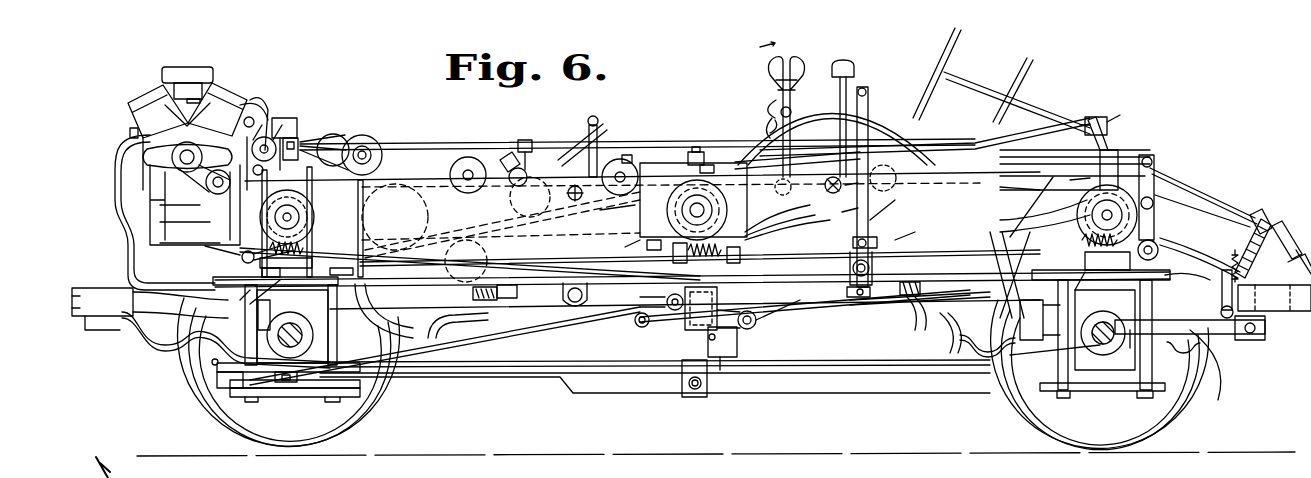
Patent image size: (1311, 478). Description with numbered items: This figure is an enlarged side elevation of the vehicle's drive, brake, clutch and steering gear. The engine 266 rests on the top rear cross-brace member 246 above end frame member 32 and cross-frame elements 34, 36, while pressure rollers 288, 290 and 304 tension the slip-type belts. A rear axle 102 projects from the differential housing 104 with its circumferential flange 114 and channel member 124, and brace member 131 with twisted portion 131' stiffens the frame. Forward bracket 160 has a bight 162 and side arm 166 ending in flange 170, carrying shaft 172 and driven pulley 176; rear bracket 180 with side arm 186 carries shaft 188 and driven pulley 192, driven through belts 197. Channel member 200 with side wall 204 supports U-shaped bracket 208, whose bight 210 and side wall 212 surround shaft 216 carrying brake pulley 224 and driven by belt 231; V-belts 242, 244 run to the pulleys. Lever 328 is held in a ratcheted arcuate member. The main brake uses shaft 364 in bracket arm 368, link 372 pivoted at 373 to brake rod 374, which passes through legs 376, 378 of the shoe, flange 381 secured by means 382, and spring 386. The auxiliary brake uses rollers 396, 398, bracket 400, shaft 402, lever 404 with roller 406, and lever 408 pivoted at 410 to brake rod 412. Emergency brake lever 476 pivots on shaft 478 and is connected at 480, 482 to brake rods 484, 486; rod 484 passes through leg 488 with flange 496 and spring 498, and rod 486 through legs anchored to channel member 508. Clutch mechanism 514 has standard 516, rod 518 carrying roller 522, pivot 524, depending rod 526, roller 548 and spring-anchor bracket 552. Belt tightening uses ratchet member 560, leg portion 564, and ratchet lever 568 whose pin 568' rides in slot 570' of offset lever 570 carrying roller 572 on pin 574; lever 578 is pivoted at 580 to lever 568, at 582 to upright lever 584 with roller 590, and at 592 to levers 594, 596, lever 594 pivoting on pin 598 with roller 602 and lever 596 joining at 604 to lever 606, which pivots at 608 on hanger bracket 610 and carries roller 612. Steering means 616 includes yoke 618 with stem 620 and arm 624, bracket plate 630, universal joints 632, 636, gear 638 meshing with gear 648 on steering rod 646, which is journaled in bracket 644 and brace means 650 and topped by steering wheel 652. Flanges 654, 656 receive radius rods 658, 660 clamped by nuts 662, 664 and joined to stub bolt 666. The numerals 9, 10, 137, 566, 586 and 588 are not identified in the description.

The engine 266 is at (225, 66).
The engine bracket 288 is at (250, 105).
The support block 608 is at (276, 118).
The support post 610 is at (284, 137).
The belt tensioner bracket 656 is at (295, 137).
The drive belt 664 is at (325, 138).
The drive pulley 290 is at (368, 135).
The idler pulley 660 is at (370, 135).
The drive shaft 304 is at (395, 140).
The pulley 522 is at (468, 157).
The clutch member 592 is at (508, 160).
The bracket 516 is at (526, 140).
The link rod 514 is at (572, 139).
The pivot 518 is at (596, 120).
The post 524 is at (600, 122).
The pulley 526 is at (625, 158).
The bracket 602 is at (639, 150).
The bracket 666 is at (694, 147).
The mount 210 is at (712, 165).
The shift lever arm 560 is at (765, 120).
The lever arm 566 is at (764, 124).
The shift lever 568 is at (793, 109).
The lever pivot 564 is at (812, 100).
The control lever 328 is at (848, 82).
The quadrant 580 is at (805, 143).
The lever 572 is at (880, 163).
The link 574 is at (797, 161).
The steering rod 578 is at (978, 147).
The steering wheel 652 is at (962, 33).
The steering lever 650 is at (1037, 64).
The steering shaft 646 is at (1022, 103).
The bracket 658 is at (1083, 118).
The bolt 654 is at (1100, 116).
The bracket arm 662 is at (1108, 124).
The rear drive assembly 160 is at (1156, 122).
The rear bracket 162 is at (1138, 133).
The rear post 582 is at (1156, 162).
The link 584 is at (1158, 178).
The steering link rod 586 is at (1165, 196).
The tie rod 588 is at (1180, 207).
The threaded sleeve 616 is at (1284, 196).
The coupling 648 is at (1258, 213).
The rod 638 is at (1286, 240).
The frame rail 166 is at (1100, 180).
The cross member 242 is at (1075, 192).
The rear pulley 172 is at (1110, 212).
The frame member 176 is at (1048, 196).
The brace 204 is at (1030, 210).
The frame member 200 is at (1015, 223).
The pivot 498 is at (1153, 242).
The arm 590 is at (1165, 240).
The spring 636 is at (1236, 253).
The clamp 644 is at (1296, 255).
The engine mount 188 is at (183, 205).
The mount plate 606 is at (185, 223).
The mount base 604 is at (200, 245).
The front pulley 180 is at (300, 195).
The pulley groove 186 is at (307, 210).
The pulley hub 192 is at (314, 217).
The belt 244 is at (439, 183).
The belt 231 is at (492, 206).
The pulley 596 is at (425, 215).
The pulley 548 is at (520, 206).
The pulley 594 is at (498, 251).
The idler 598 is at (578, 202).
The frame member 208 is at (617, 217).
The frame member 212 is at (624, 239).
The spring 386 is at (673, 247).
The pulley 224 is at (697, 202).
The shaft 216 is at (700, 213).
The lever 378 is at (765, 222).
The link 381 is at (756, 234).
The link 382 is at (812, 225).
The pivot block 480 is at (849, 238).
The link 476 is at (856, 210).
The link 478 is at (887, 212).
The rod 484 is at (910, 245).
The brace 373 is at (972, 245).
The pivot 570 is at (876, 196).
The lever position 568' is at (801, 176).
The pivot 570' is at (827, 192).
The exhaust pipe 246 is at (160, 290).
The front bumper 32 is at (85, 300).
The pivot link 612 is at (245, 262).
The front axle support 104 is at (238, 300).
The bracket 197 is at (250, 305).
The plate 508 is at (273, 314).
The front axle 102 is at (295, 330).
The hose 137 is at (160, 356).
The fitting 114 is at (214, 365).
The bracket 124 is at (290, 386).
The rod 486 is at (548, 266).
The bracket 376 is at (670, 252).
The bracket 36 is at (500, 300).
The rod 552 is at (545, 330).
The lower frame bar 131 is at (655, 397).
The lower frame bar 131' is at (609, 408).
The pulley 406 is at (659, 299).
The pulley 402 is at (738, 312).
The section line 9 is at (783, 292).
The rod 482 is at (860, 298).
The clevis 368 is at (880, 274).
The block 372 is at (968, 282).
The frame rail 374 is at (815, 265).
The pulley 396 is at (665, 330).
The housing 404 is at (690, 330).
The bracket 408 is at (738, 340).
The link 398 is at (795, 312).
The bracket 400 is at (738, 352).
The mount block 410 is at (718, 360).
The rod 412 is at (895, 305).
The lever 34 is at (918, 323).
The spring 364 is at (946, 336).
The section line 10 is at (703, 275).
The spring 488 is at (1086, 258).
The bracket 496 is at (1088, 290).
The rear axle 170 is at (1128, 282).
The bracket 632 is at (1187, 277).
The post 630 is at (1222, 308).
The rear bar 620 is at (1255, 342).
The bracket 624 is at (1217, 385).
The link 618 is at (1130, 350).